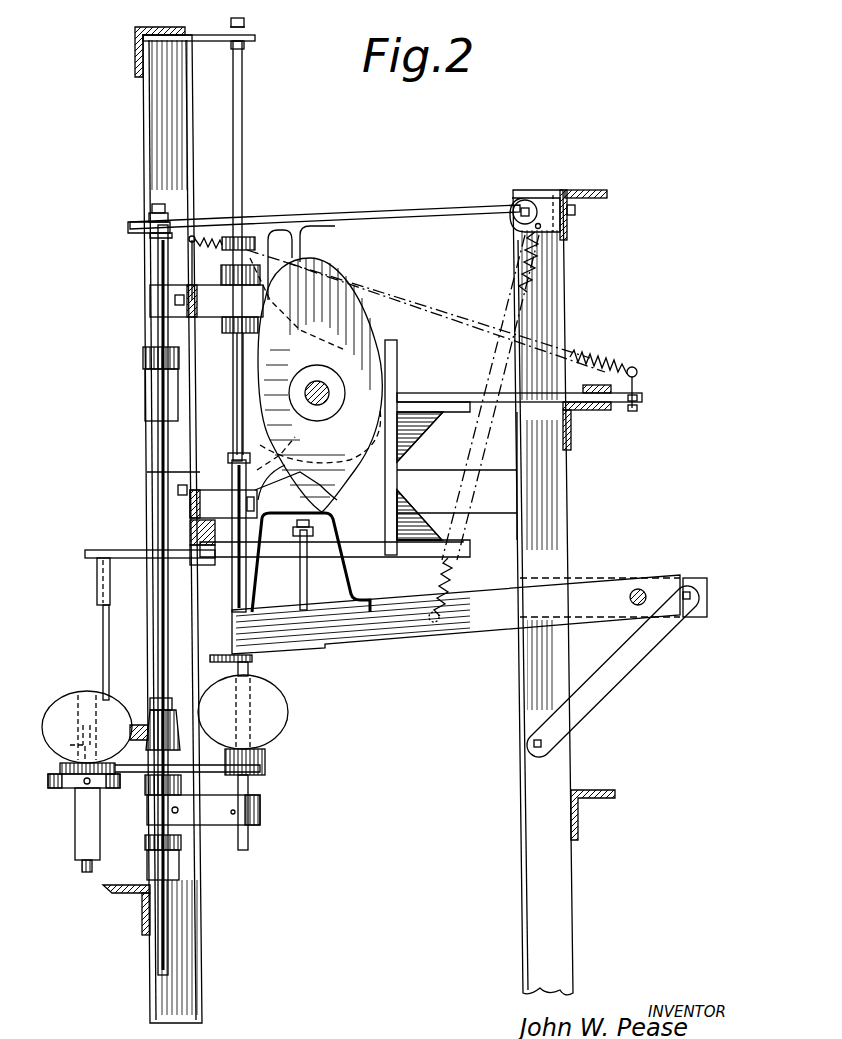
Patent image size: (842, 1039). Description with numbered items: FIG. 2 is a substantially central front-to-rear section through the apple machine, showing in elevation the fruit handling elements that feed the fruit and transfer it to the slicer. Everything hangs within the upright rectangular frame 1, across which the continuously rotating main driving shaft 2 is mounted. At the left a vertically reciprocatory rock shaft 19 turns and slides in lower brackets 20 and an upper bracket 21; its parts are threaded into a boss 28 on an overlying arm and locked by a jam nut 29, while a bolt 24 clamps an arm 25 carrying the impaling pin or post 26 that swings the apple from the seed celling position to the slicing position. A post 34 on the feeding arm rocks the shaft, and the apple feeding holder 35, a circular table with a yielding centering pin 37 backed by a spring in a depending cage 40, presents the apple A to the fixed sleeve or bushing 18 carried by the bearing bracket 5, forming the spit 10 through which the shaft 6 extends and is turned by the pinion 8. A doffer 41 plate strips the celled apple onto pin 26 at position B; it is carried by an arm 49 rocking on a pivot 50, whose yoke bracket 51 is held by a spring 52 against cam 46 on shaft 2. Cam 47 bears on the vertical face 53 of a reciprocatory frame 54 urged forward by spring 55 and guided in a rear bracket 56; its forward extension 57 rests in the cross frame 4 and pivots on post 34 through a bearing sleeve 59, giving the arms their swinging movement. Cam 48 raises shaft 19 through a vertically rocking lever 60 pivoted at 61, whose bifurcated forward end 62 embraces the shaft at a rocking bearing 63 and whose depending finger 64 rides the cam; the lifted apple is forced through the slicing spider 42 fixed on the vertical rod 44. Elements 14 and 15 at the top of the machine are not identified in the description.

The upright rectangular frame 1 is at (235, 958).
The main driving shaft 2 is at (329, 393).
The cross frame 4 is at (215, 300).
The bearing bracket 5 is at (245, 501).
The shaft 6 is at (236, 388).
The pinion 8 is at (242, 240).
The spit 10 is at (232, 527).
The bolt 14 is at (245, 25).
The top bar 15 is at (255, 42).
The fixed sleeve or extended bushing 18 is at (225, 565).
The vertically reciprocatory rock shaft 19 is at (158, 290).
The lower brackets 20 is at (181, 783).
The upper bracket 21 is at (143, 358).
The bolt 24 is at (185, 810).
The arm 25 is at (260, 810).
The impaling pin or post 26 is at (265, 770).
The boss 28 is at (180, 705).
The jam nut 29 is at (150, 704).
The post 34 is at (103, 633).
The apple feeding holder 35 is at (55, 788).
The centering pin 37 is at (82, 872).
The depending cage 40 is at (100, 835).
The doffer 41 is at (220, 665).
The slicing spider 42 is at (380, 640).
The vertical rod 44 is at (300, 578).
The cam 46 is at (283, 488).
The cam 47 is at (370, 272).
The cam 48 is at (310, 437).
The arm 49 is at (480, 630).
The pivot 50 is at (646, 590).
The yoke bracket 51 is at (360, 570).
The spring 52 is at (455, 580).
The vertical face 53 is at (385, 500).
The reciprocatory frame 54 is at (440, 394).
The spring 55 is at (607, 365).
The bracket 56 is at (605, 415).
The forward extension 57 is at (118, 540).
The bearing sleeve 59 is at (96, 575).
The vertically rocking lever 60 is at (410, 212).
The pivot 61 is at (530, 195).
The bifurcated forward end 62 is at (135, 233).
The rocking bearing 63 is at (150, 216).
The depending finger 64 is at (298, 250).
The apple A is at (62, 698).
The apple B is at (288, 700).